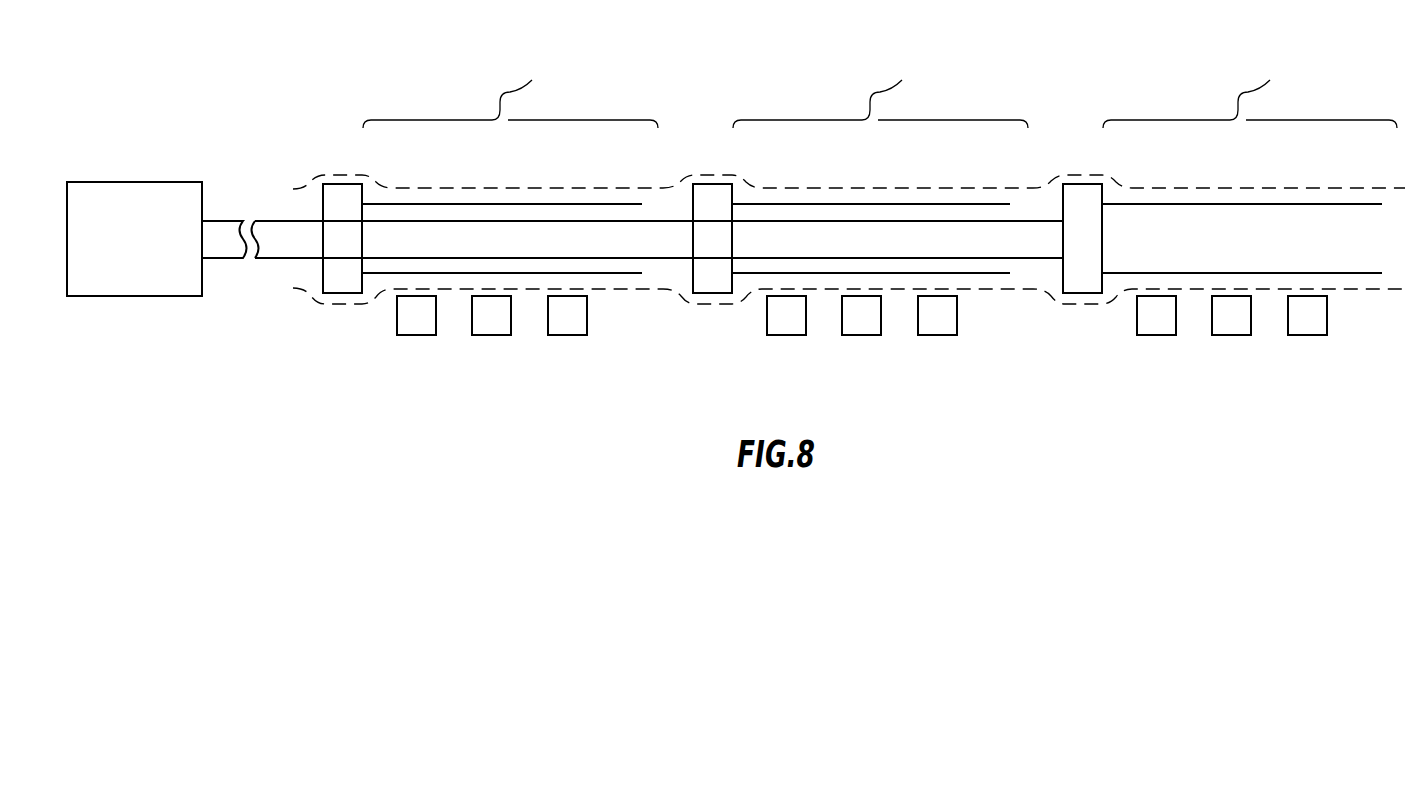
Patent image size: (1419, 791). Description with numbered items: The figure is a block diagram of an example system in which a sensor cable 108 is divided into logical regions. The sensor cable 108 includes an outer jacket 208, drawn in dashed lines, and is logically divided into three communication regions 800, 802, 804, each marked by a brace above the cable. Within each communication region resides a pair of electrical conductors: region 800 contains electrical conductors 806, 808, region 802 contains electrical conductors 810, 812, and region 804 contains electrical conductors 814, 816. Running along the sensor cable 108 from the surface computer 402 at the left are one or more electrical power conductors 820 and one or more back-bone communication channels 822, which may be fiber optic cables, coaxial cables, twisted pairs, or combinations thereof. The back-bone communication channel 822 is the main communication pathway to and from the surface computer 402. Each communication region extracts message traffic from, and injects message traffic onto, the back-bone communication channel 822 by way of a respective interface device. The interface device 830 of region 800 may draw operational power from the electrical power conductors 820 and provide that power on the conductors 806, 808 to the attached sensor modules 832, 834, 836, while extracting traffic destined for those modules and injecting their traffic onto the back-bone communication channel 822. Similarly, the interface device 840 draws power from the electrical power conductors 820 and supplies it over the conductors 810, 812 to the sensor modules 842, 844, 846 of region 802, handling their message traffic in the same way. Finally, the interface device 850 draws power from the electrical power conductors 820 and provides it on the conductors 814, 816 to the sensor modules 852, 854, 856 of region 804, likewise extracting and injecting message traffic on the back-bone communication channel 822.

The sensor cable 108 is at (301, 156).
The outer jacket 208 is at (333, 175).
The surface computer 402 is at (135, 298).
The communication region 800 is at (510, 95).
The communication region 802 is at (880, 95).
The communication region 804 is at (1250, 95).
The electrical conductor 806 is at (435, 204).
The electrical conductor 808 is at (542, 258).
The electrical conductor 810 is at (792, 204).
The electrical conductor 812 is at (913, 258).
The electrical conductor 814 is at (1162, 204).
The electrical conductor 816 is at (1283, 273).
The electrical power conductor 820 is at (274, 260).
The back-bone communication channel 822 is at (277, 218).
The interface device 830 is at (350, 294).
The sensor module 832 is at (417, 335).
The sensor module 834 is at (492, 335).
The sensor module 836 is at (568, 335).
The interface device 840 is at (720, 294).
The sensor module 842 is at (787, 335).
The sensor module 844 is at (862, 335).
The sensor module 846 is at (938, 335).
The interface device 850 is at (1090, 294).
The sensor module 852 is at (1157, 335).
The sensor module 854 is at (1232, 335).
The sensor module 856 is at (1308, 335).